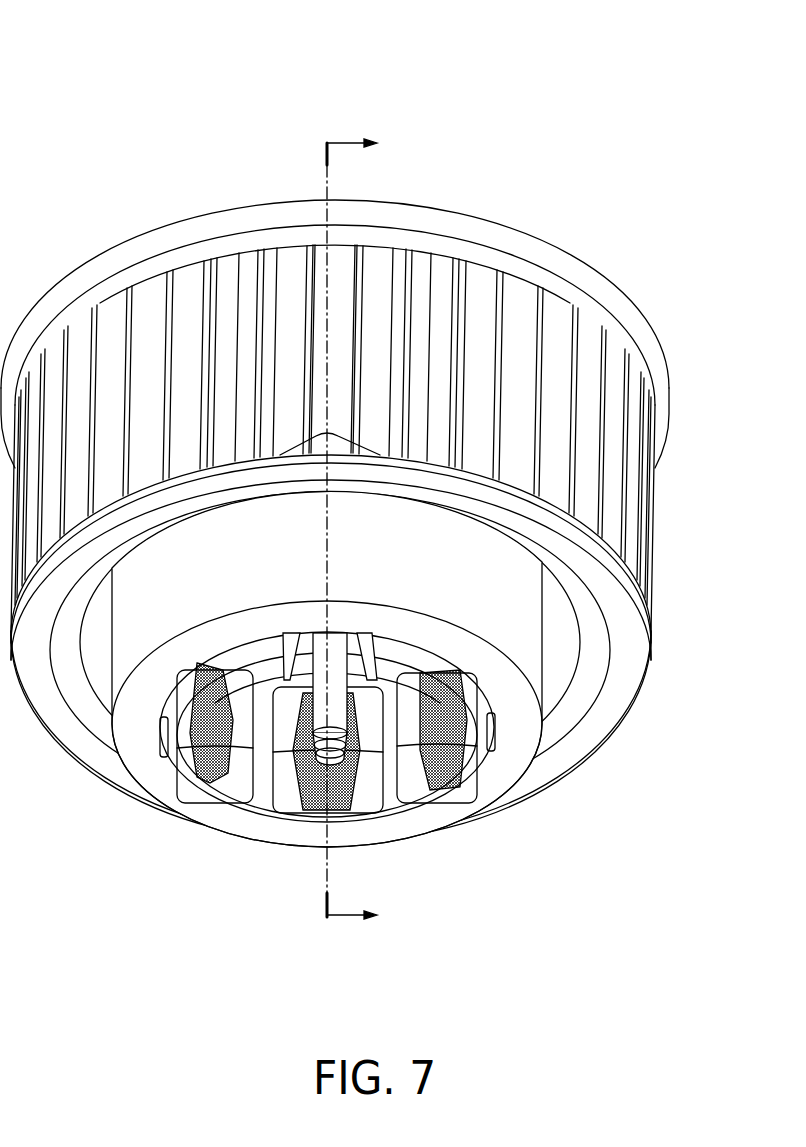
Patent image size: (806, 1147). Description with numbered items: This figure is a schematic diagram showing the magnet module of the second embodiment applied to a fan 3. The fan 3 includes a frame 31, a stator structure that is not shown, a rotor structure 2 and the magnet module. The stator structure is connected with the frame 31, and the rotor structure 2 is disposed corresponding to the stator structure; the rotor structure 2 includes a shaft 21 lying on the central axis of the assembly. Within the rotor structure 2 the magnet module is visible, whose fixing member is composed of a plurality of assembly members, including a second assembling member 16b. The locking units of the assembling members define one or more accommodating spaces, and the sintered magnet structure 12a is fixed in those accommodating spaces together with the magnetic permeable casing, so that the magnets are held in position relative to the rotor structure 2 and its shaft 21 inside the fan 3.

The fan 3 is at (335, 469).
The frame 31 is at (545, 260).
The shaft 21 is at (337, 648).
The rotor structure 2 is at (357, 687).
The second assembling member 16b is at (238, 787).
The sintered magnet structure 12a is at (445, 770).